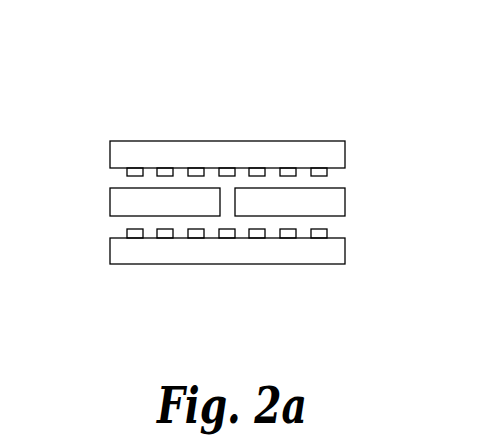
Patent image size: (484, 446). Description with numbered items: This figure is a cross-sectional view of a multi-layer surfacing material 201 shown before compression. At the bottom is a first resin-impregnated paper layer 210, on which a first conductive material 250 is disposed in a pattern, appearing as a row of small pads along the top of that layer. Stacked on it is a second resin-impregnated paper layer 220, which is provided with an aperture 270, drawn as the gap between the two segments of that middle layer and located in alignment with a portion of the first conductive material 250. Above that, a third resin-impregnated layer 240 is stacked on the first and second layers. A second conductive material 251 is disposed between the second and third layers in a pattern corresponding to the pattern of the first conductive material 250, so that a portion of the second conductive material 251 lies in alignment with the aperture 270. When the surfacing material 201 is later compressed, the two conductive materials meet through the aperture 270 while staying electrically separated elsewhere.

The surfacing material 201 is at (203, 110).
The third resin-impregnated layer 240 is at (333, 153).
The second conductive material 251 is at (191, 172).
The second resin-impregnated paper layer 220 is at (335, 200).
The aperture 270 is at (229, 205).
The first conductive material 250 is at (193, 238).
The first resin-impregnated paper layer 210 is at (333, 252).